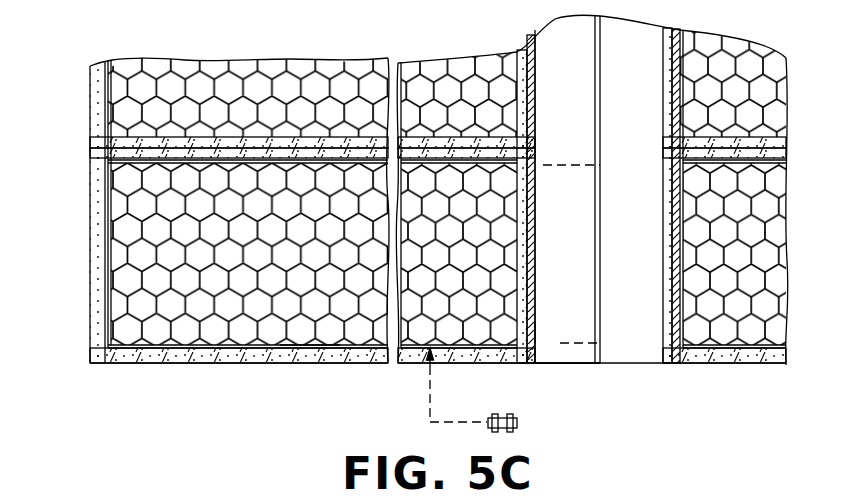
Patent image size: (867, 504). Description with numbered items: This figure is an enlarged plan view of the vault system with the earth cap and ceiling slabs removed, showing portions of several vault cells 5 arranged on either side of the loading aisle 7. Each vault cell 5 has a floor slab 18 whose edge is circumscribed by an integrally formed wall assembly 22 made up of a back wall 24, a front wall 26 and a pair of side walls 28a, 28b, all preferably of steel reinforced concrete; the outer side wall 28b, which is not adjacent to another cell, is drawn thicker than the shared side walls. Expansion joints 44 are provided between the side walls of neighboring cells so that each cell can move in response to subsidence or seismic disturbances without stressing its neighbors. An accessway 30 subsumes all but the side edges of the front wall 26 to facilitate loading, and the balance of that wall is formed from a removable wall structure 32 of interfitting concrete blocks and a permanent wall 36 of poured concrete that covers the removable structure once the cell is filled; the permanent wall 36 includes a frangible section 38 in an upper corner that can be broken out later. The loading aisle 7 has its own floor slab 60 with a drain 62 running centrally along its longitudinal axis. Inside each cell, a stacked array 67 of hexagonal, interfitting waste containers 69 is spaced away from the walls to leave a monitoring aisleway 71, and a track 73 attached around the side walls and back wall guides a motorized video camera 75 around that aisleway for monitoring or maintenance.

The vault cell 5 is at (110, 48).
The loading aisle 7 is at (660, 373).
The floor slab 18 is at (508, 218).
The wall assembly 22 is at (86, 177).
The back wall 24 is at (100, 300).
The front wall 26 is at (539, 270).
The side wall 28a is at (125, 155).
The side wall 28b is at (178, 365).
The accessway 30 is at (608, 165).
The removable wall structure 32 is at (524, 258).
The permanent wall 36 is at (528, 305).
The frangible section 38 is at (537, 322).
The expansion joint 44 is at (535, 148).
The floor slab 60 is at (651, 312).
The drain 62 is at (602, 354).
The stacked array 67 is at (157, 242).
The waste container 69 is at (323, 328).
The monitoring aisleway 71 is at (143, 340).
The track 73 is at (420, 363).
The motorized video camera 75 is at (517, 423).